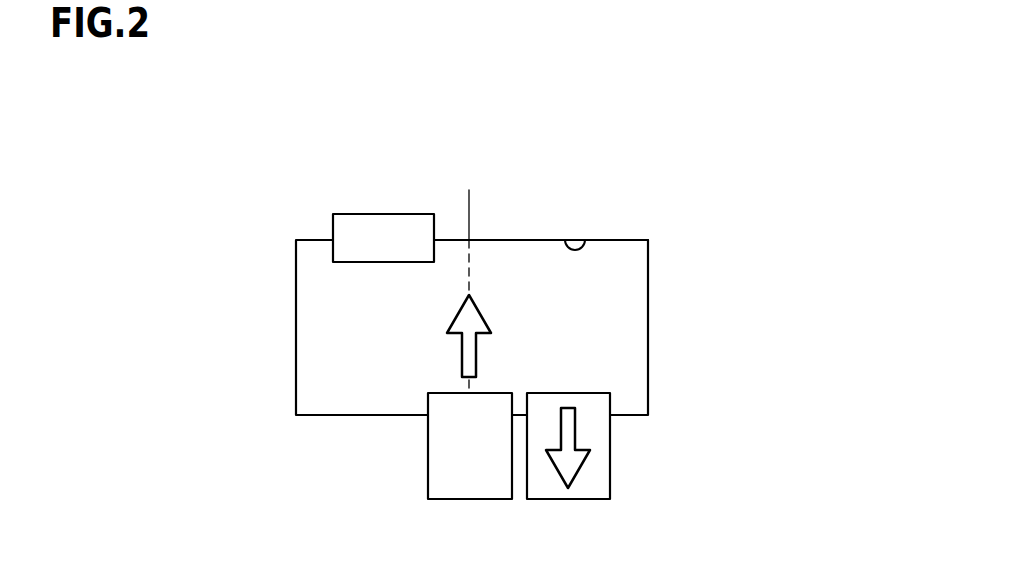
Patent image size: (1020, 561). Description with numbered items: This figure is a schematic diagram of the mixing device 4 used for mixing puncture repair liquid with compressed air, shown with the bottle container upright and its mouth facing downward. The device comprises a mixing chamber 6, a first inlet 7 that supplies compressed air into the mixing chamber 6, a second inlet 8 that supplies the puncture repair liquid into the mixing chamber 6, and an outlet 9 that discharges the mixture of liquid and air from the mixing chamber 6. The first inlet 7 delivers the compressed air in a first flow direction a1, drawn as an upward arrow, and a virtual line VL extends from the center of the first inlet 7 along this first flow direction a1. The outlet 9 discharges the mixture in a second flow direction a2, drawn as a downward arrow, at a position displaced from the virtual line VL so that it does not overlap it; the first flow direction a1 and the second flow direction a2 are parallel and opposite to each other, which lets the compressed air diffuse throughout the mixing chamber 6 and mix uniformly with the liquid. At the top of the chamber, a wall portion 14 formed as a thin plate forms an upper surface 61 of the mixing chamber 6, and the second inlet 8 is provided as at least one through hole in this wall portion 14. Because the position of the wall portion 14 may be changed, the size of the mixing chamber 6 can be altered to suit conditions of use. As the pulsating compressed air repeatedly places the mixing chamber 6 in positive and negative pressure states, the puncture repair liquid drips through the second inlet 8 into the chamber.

The mixing device 4 is at (646, 138).
The mixing chamber 6 is at (583, 268).
The upper surface 61 is at (590, 240).
The wall portion 14 is at (548, 238).
The second inlet 8 is at (360, 264).
The first inlet 7 is at (495, 393).
The outlet 9 is at (590, 393).
The virtual line VL is at (469, 210).
The first flow direction a1 is at (463, 353).
The second flow direction a2 is at (580, 470).